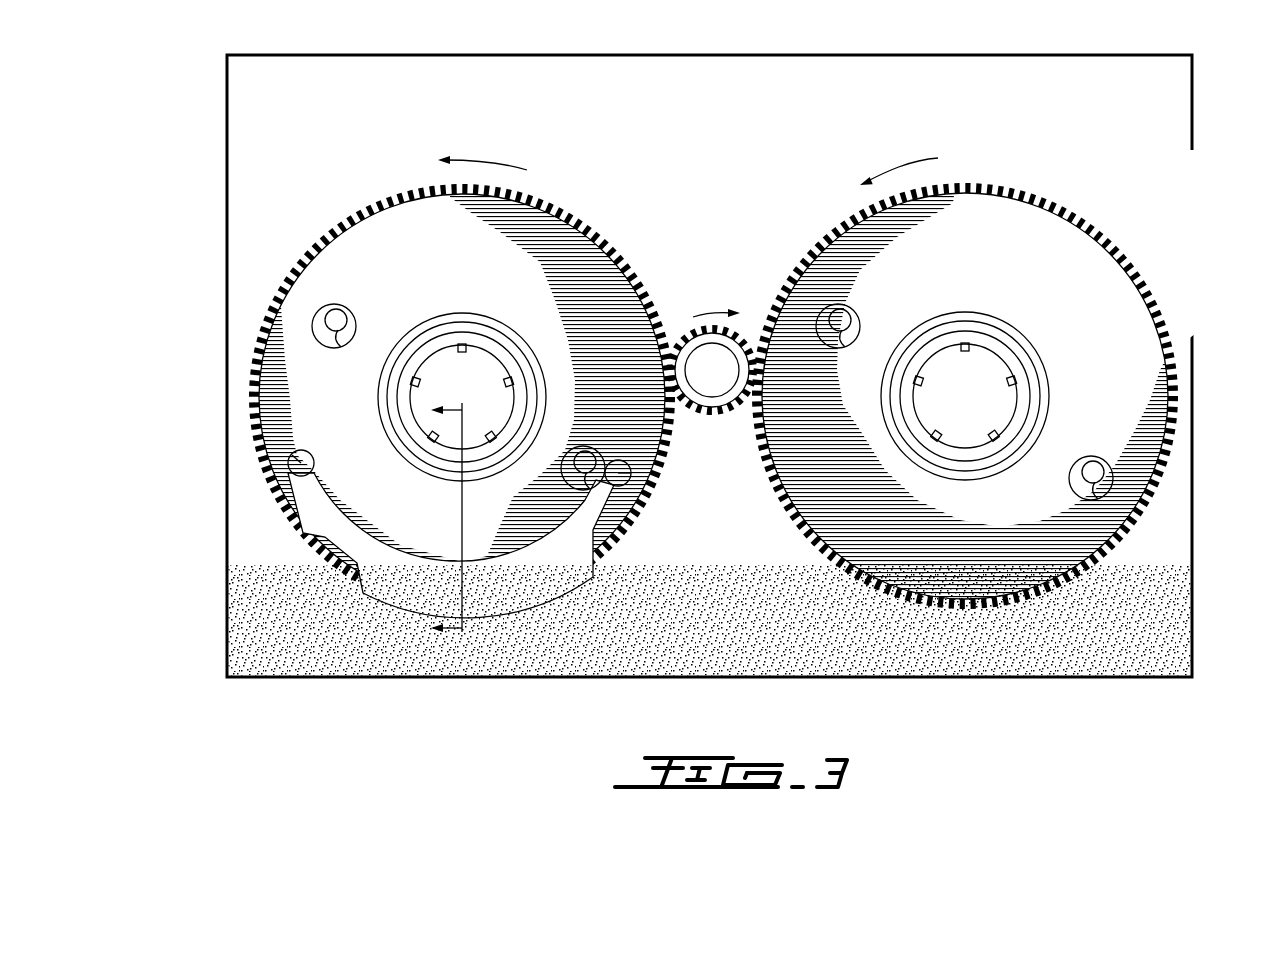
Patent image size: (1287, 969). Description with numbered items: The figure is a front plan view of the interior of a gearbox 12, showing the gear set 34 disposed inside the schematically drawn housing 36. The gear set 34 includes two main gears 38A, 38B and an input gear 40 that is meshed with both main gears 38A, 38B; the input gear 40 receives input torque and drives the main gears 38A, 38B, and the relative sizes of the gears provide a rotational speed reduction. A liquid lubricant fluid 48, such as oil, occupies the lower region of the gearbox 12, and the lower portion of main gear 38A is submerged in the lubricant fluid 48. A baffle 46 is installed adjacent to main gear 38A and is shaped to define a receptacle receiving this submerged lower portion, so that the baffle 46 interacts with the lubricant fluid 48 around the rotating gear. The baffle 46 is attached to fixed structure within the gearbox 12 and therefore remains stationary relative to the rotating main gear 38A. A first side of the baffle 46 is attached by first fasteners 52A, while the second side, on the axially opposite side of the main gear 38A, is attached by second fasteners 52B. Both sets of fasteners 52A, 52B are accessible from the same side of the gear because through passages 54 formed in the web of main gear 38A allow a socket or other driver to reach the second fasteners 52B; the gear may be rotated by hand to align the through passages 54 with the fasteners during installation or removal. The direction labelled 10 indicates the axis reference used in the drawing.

The engine central longitudinal axis direction 10 is at (442, 523).
The gearbox 12 is at (225, 71).
The gear set 34 is at (1144, 142).
The housing 36 is at (226, 318).
The main gear 38A is at (417, 222).
The main gear 38B is at (1009, 222).
The input gear 40 is at (694, 342).
The baffle 46 is at (332, 521).
The lubricant fluid 48 is at (713, 642).
The first fasteners 52A is at (291, 457).
The second fasteners 52B is at (585, 481).
The through passages 54 is at (316, 306).